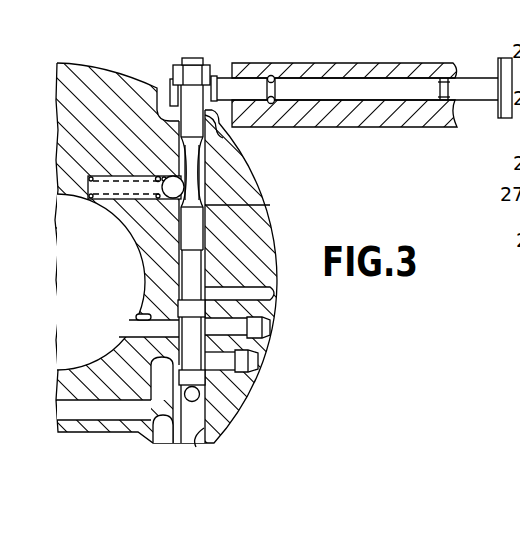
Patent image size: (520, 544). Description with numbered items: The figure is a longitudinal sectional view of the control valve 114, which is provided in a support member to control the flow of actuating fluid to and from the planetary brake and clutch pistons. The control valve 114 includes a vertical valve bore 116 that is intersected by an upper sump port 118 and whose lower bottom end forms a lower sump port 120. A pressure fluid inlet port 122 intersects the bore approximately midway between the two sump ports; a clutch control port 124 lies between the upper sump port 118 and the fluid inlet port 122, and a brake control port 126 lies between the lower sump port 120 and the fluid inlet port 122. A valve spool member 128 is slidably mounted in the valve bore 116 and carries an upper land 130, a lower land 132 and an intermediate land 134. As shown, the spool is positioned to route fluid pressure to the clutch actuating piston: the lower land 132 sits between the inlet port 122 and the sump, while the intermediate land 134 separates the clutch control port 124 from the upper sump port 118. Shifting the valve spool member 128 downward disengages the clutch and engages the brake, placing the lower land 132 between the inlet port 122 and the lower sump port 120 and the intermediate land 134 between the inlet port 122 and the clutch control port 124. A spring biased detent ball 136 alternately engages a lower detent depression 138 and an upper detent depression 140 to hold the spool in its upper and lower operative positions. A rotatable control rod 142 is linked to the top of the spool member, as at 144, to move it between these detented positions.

The control valve 114 is at (278, 190).
The valve bore 116 is at (198, 430).
The upper sump port 118 is at (277, 295).
The lower sump port 120 is at (188, 446).
The pressure fluid inlet port 122 is at (147, 357).
The clutch control port 124 is at (157, 324).
The brake control port 126 is at (233, 409).
The valve spool member 128 is at (212, 118).
The upper land 130 is at (195, 228).
The lower land 132 is at (198, 377).
The intermediate land 134 is at (183, 308).
The spring biased detent ball 136 is at (157, 197).
The lower detent depression 138 is at (200, 187).
The upper detent depression 140 is at (195, 158).
The rotatable control rod 142 is at (222, 76).
The link connection 144 is at (170, 96).